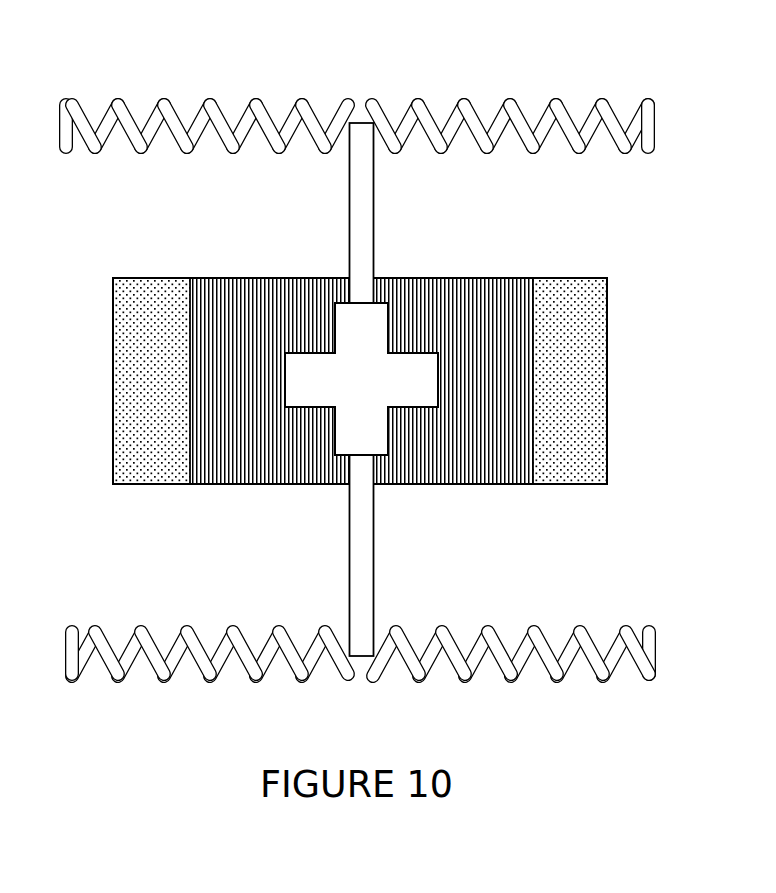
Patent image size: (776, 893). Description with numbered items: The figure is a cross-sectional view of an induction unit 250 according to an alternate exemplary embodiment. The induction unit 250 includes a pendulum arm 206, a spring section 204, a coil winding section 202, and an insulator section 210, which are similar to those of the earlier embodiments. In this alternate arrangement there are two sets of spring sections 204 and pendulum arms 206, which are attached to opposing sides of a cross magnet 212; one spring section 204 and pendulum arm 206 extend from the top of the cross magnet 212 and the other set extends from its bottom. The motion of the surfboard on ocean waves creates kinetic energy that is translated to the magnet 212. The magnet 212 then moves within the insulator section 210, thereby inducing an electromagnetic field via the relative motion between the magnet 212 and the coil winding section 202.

The induction unit 250 is at (112, 47).
The coil winding section 202 is at (347, 357).
The spring section 204 is at (652, 114).
The pendulum arm 206 is at (374, 185).
The insulator section 210 is at (583, 298).
The cross magnet 212 is at (386, 302).